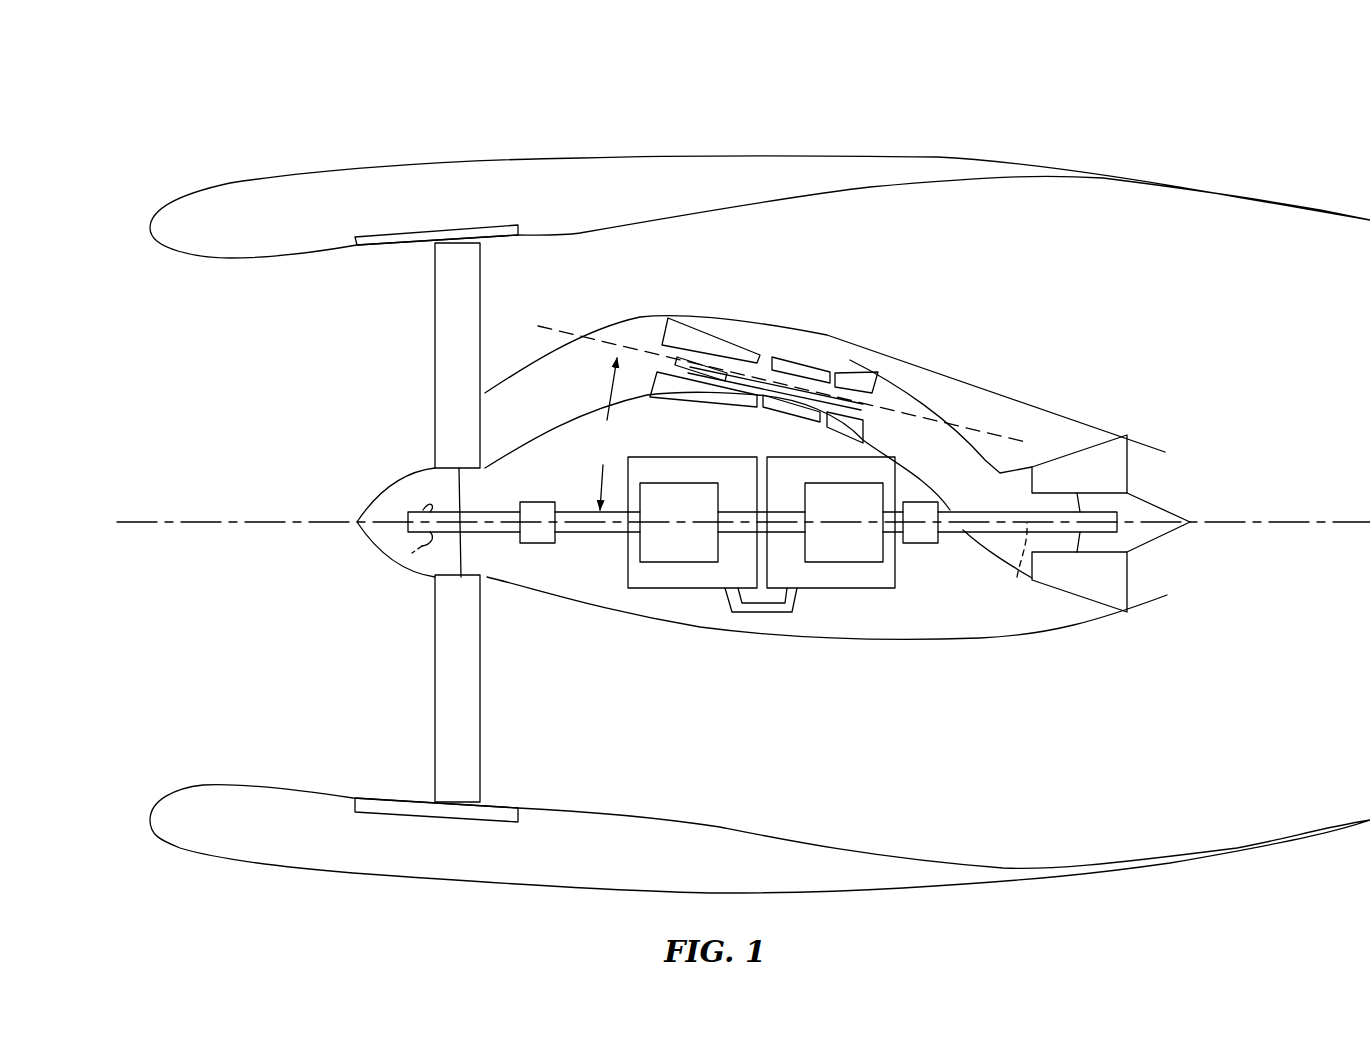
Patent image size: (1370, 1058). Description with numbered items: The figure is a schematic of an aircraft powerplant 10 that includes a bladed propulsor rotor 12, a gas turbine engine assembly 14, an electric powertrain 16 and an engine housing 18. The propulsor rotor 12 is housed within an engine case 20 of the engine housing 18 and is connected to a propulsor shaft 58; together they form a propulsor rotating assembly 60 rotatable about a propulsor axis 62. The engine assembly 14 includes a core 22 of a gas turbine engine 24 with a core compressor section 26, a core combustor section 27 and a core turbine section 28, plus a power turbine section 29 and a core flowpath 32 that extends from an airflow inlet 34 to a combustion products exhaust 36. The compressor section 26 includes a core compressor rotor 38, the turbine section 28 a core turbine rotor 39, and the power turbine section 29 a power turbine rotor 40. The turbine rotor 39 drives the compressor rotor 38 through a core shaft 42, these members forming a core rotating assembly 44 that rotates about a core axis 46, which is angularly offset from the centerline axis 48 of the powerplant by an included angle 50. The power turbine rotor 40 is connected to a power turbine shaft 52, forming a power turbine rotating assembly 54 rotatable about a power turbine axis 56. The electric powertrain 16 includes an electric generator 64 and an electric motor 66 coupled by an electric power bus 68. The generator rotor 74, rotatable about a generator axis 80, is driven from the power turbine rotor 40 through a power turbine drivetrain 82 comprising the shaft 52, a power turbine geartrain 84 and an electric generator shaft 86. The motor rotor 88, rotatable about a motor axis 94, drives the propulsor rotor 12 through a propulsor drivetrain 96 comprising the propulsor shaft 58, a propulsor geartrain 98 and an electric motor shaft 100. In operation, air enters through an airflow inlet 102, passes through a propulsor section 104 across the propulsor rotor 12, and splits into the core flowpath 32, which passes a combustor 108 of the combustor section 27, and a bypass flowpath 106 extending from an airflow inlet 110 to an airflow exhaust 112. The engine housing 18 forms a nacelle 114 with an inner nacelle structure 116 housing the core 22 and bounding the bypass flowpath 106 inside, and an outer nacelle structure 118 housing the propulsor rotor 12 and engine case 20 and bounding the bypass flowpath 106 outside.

The aircraft powerplant 10 is at (204, 116).
The propulsor rotor 12 is at (410, 522).
The gas turbine engine assembly 14 is at (995, 391).
The electric powertrain 16 is at (827, 657).
The engine housing 18 is at (760, 158).
The engine case 20 is at (403, 227).
The core 22 is at (750, 340).
The gas turbine engine 24 is at (955, 391).
The core compressor section 26 is at (680, 322).
The core combustor section 27 is at (790, 338).
The core turbine section 28 is at (893, 362).
The power turbine section 29 is at (1092, 428).
The core flowpath 32 is at (577, 395).
The airflow inlet 34 is at (490, 433).
The combustion products exhaust 36 is at (1143, 510).
The core compressor rotor 38 is at (660, 335).
The core turbine rotor 39 is at (900, 377).
The power turbine rotor 40 is at (1130, 457).
The core shaft 42 is at (755, 370).
The core rotating assembly 44 is at (638, 329).
The core axis 46 is at (575, 325).
The centerline axis 48 is at (133, 527).
The included angle 50 is at (602, 434).
The power turbine shaft 52 is at (998, 533).
The power turbine rotating assembly 54 is at (1139, 575).
The power turbine axis 56 is at (1019, 573).
The propulsor shaft 58 is at (423, 510).
The propulsor rotating assembly 60 is at (391, 535).
The propulsor axis 62 is at (420, 545).
The electric generator 64 is at (831, 577).
The electric motor 66 is at (674, 579).
The electric power bus 68 is at (757, 623).
The electric generator rotor 74 is at (825, 515).
The generator axis 80 is at (872, 525).
The power turbine drivetrain 82 is at (942, 576).
The power turbine geartrain 84 is at (917, 500).
The electric generator shaft 86 is at (888, 534).
The electric motor rotor 88 is at (665, 515).
The motor axis 94 is at (687, 525).
The propulsor drivetrain 96 is at (530, 566).
The propulsor geartrain 98 is at (527, 500).
The electric motor shaft 100 is at (595, 533).
The airflow inlet 102 is at (148, 340).
The propulsor section 104 is at (503, 186).
The bypass flowpath 106 is at (968, 258).
The combustor 108 is at (800, 358).
The airflow inlet 110 is at (490, 300).
The airflow exhaust 112 is at (1190, 278).
The nacelle 114 is at (867, 148).
The inner nacelle structure 116 is at (1084, 641).
The outer nacelle structure 118 is at (1038, 897).